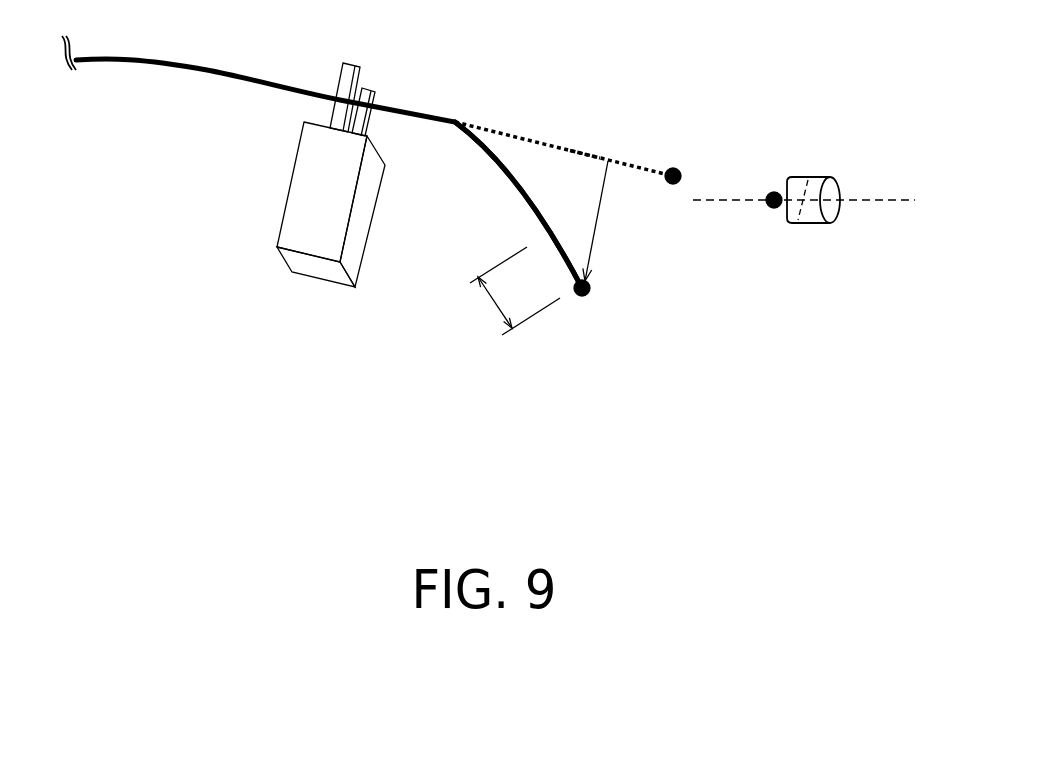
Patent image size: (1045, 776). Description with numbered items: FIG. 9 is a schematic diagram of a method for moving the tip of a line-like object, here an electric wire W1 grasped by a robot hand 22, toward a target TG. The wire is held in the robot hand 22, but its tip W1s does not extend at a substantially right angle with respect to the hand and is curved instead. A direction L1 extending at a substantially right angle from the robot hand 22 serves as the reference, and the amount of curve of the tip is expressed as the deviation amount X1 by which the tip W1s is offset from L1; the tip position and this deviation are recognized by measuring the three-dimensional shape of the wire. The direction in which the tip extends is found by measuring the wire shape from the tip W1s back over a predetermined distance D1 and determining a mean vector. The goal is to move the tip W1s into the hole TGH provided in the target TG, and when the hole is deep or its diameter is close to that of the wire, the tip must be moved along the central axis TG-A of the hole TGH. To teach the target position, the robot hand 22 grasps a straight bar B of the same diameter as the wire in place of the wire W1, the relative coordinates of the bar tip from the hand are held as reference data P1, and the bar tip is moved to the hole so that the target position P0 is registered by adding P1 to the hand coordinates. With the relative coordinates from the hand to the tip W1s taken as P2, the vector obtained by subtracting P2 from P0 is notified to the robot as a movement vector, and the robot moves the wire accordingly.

The electric wire W1 is at (193, 60).
The robot hand 22 is at (312, 267).
The direction extending at a substantially right angle with respect to the robot han L1 is at (503, 133).
The straight bar B is at (585, 155).
The reference data P1 is at (673, 168).
The deviation amount X1 is at (587, 221).
The distance D1 is at (508, 291).
The relative coordinates from the robot hand to the tip of the electric wire P2 is at (590, 292).
The tip of the electric wire W1s is at (585, 297).
The target TG is at (813, 178).
The hole TGH is at (830, 185).
The target position P0 is at (768, 208).
The central axis of the hole TG-A is at (902, 202).